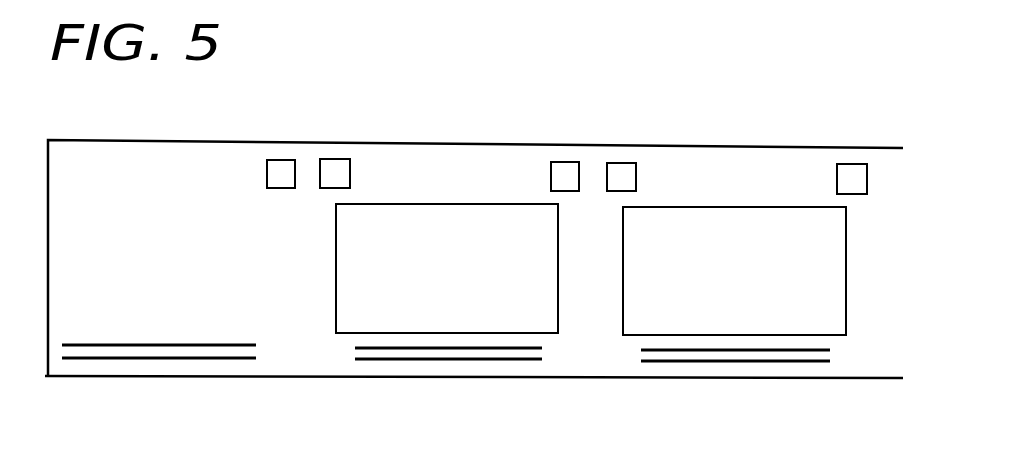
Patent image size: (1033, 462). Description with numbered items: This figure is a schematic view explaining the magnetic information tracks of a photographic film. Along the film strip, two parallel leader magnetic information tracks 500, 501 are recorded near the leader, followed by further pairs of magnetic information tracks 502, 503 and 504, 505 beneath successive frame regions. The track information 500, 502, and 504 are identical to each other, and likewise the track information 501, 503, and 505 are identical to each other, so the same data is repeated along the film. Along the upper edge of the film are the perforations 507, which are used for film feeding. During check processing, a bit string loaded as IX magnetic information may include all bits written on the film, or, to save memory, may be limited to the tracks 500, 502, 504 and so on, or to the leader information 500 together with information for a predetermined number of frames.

The leader magnetic information track 500 is at (163, 358).
The leader magnetic information track 501 is at (167, 345).
The magnetic information track 502 is at (405, 359).
The magnetic information track 503 is at (477, 348).
The magnetic information track 504 is at (697, 361).
The magnetic information track 505 is at (770, 350).
The perforations 507 is at (283, 160).